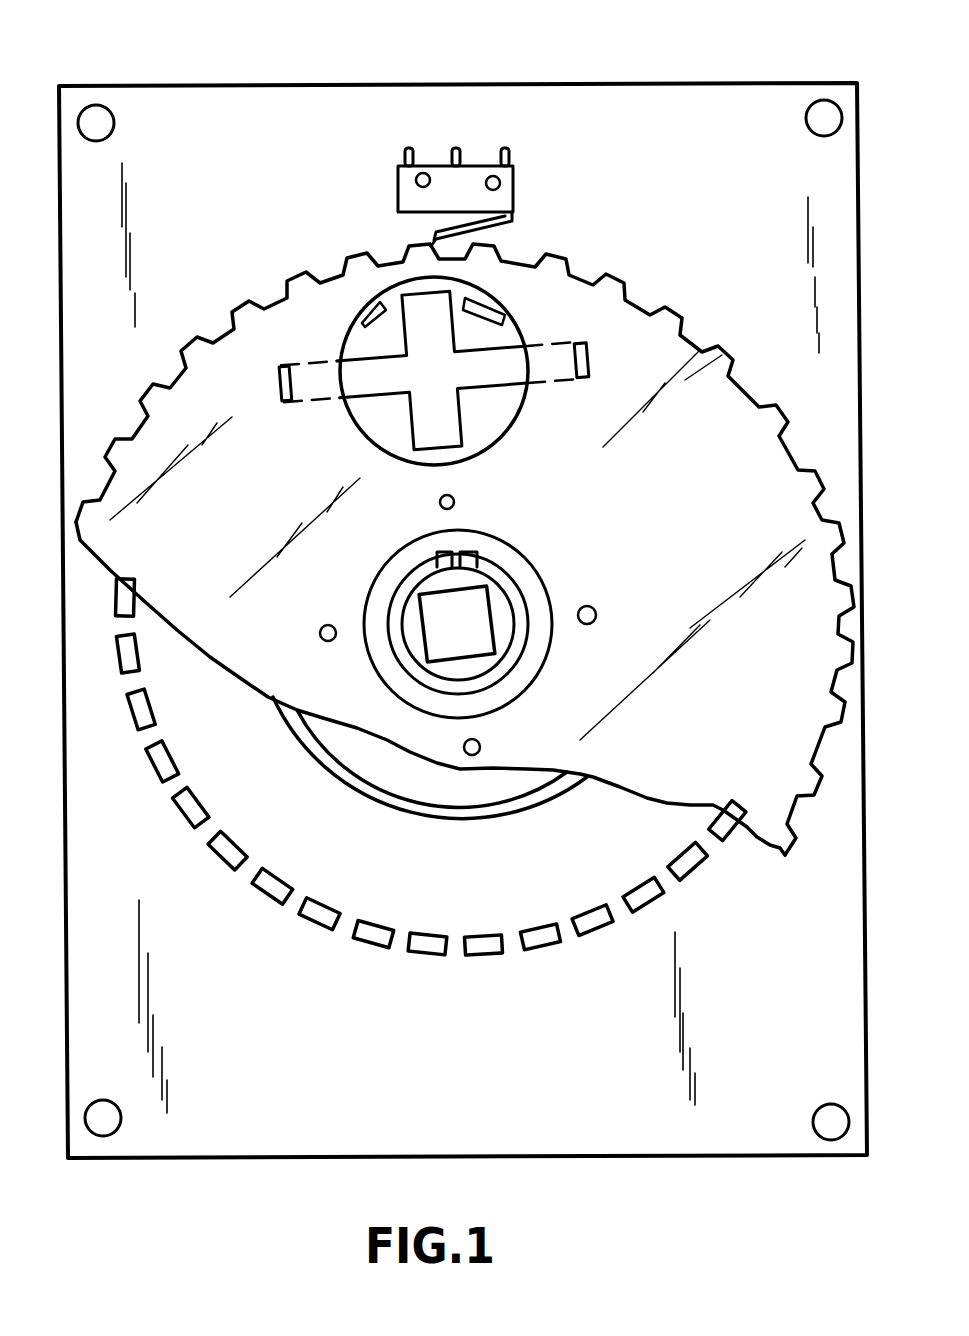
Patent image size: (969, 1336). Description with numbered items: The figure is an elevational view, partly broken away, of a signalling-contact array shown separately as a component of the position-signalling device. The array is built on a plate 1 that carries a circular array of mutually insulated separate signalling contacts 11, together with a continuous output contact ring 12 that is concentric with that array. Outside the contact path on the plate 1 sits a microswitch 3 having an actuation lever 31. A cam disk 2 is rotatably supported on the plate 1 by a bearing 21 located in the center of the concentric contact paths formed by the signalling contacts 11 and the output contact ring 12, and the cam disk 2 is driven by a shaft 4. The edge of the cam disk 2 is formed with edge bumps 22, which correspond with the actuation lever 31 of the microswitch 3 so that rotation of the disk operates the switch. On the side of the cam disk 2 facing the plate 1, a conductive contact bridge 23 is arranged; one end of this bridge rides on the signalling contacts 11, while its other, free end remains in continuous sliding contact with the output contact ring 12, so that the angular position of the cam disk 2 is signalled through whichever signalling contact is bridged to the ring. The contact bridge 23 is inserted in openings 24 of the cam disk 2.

The plate 1 is at (755, 137).
The cam disk 2 is at (582, 302).
The microswitch 3 is at (470, 180).
The shaft 4 is at (477, 608).
The signalling contacts 11 is at (215, 855).
The output contact ring 12 is at (423, 808).
The bearing 21 is at (502, 598).
The edge bumps 22 is at (556, 245).
The contact bridge 23 is at (418, 363).
The openings 24 is at (285, 368).
The actuation lever 31 is at (412, 250).